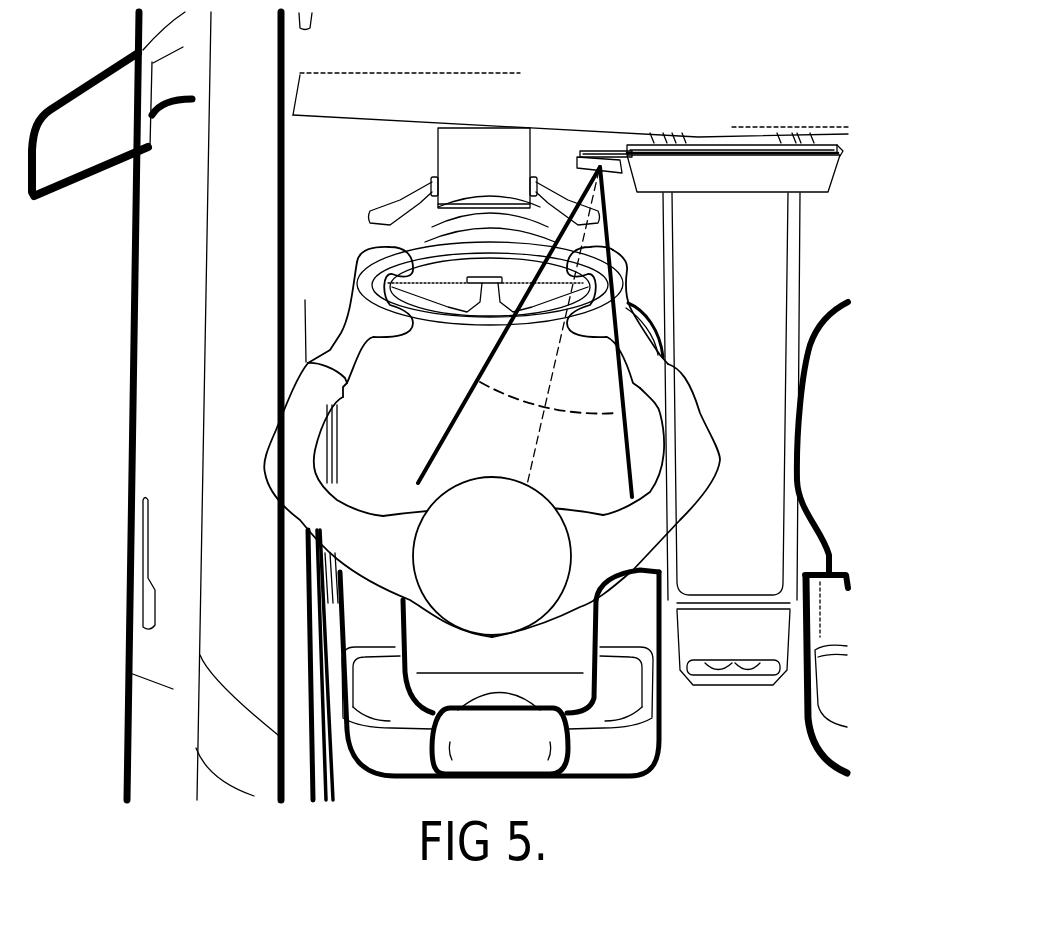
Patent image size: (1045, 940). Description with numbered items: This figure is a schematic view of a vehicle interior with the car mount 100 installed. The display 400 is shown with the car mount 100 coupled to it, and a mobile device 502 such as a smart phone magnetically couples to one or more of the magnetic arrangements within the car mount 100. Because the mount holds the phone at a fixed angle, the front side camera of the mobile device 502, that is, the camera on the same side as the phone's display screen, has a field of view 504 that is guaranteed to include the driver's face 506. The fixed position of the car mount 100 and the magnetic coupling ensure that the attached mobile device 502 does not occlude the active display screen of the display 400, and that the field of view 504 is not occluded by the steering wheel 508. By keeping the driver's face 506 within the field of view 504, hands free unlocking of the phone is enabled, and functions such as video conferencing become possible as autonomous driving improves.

The car mount 100 is at (607, 151).
The display 400 is at (843, 150).
The mobile device 502 is at (577, 158).
The field of view 504 is at (578, 416).
The driver's face 506 is at (520, 577).
The steering wheel 508 is at (427, 243).